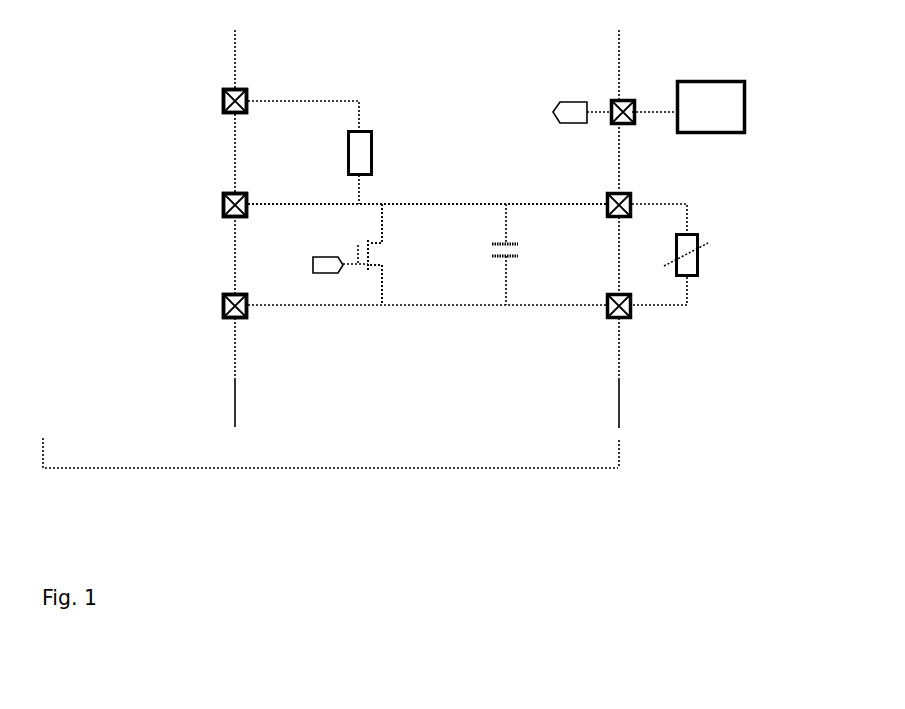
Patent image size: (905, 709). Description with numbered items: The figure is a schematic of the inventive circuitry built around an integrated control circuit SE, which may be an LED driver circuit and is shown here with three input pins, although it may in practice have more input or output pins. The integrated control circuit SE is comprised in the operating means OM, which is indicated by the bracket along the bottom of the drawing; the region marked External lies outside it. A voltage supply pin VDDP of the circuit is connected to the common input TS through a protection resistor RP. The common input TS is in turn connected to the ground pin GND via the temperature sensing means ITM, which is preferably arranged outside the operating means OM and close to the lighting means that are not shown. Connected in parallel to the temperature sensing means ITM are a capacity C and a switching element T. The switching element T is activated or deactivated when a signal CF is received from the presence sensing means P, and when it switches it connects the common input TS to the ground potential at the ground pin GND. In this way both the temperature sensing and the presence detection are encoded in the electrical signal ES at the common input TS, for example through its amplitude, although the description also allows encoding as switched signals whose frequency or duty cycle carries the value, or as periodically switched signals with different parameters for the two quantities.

The voltage supply pin VDDP is at (208, 113).
The common input TS is at (219, 211).
The ground pin GND is at (205, 306).
The electrical signal ES is at (262, 202).
The protection resistor RP is at (372, 155).
The switching element T is at (358, 264).
The signal CF is at (449, 201).
The capacity C is at (513, 261).
The temperature sensing means ITM is at (706, 255).
The presence sensing means P is at (711, 107).
The integrated control circuit SE is at (174, 403).
The external unit External is at (713, 413).
The operating means OM is at (331, 469).